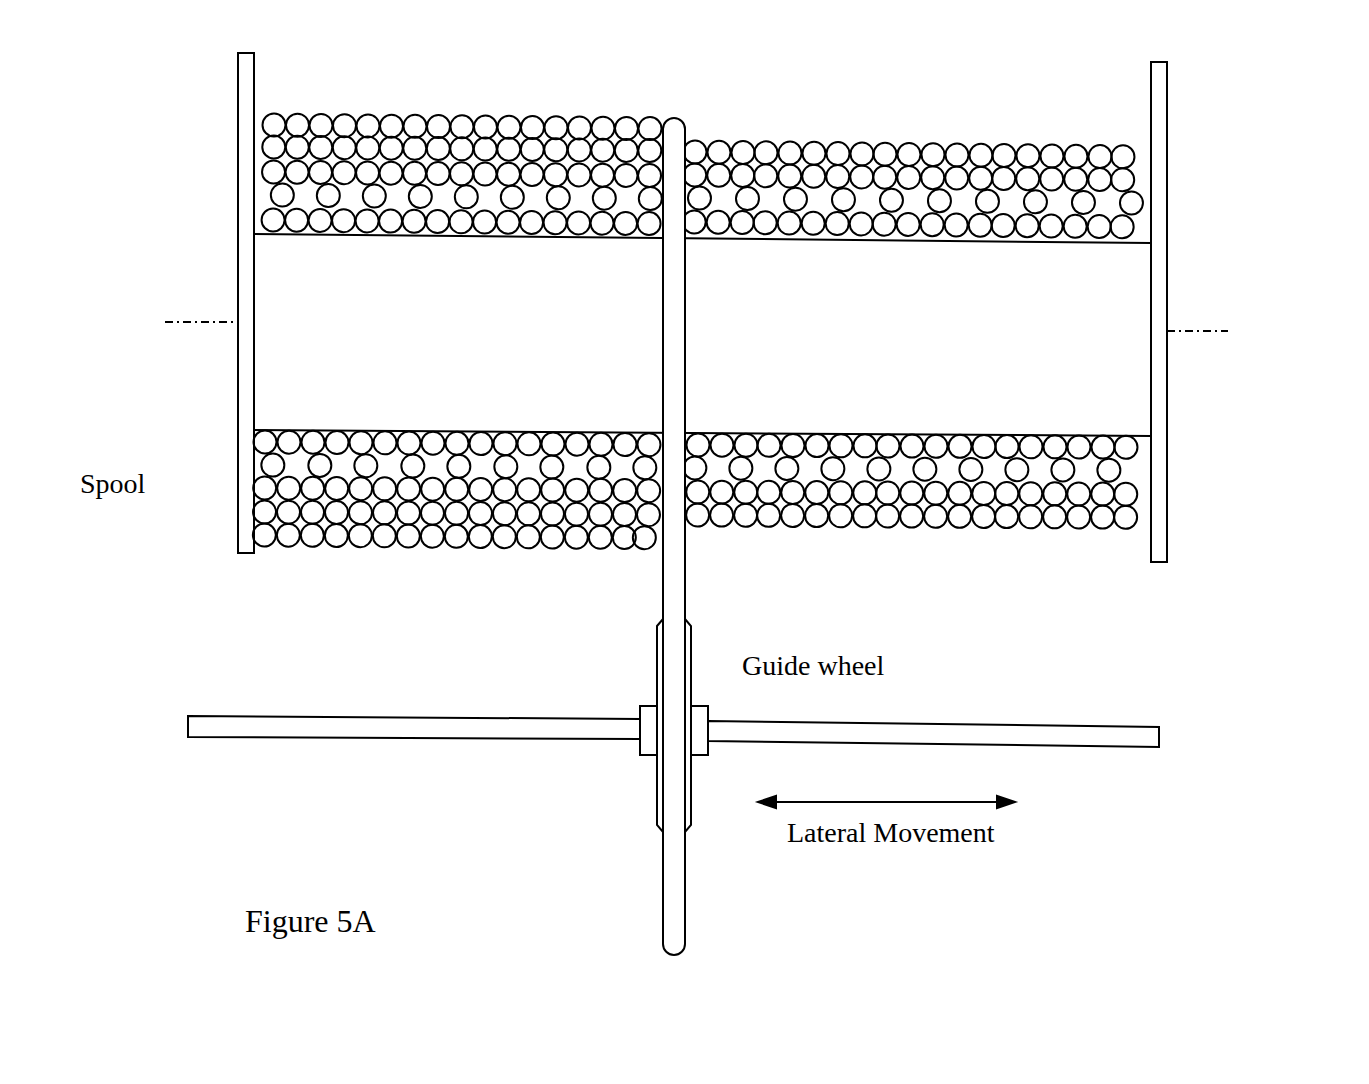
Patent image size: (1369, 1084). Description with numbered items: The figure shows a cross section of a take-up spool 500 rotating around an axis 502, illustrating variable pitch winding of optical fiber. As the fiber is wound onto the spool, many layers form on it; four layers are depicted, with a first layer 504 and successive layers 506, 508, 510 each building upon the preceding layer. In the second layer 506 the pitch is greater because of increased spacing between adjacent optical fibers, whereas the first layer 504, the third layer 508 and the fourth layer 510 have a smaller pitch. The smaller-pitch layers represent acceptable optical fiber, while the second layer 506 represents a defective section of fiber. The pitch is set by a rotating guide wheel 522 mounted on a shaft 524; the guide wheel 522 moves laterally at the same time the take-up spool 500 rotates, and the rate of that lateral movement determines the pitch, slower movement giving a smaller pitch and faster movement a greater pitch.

The take-up spool 500 is at (238, 188).
The axis 502 is at (183, 315).
The first layer 504 is at (1152, 228).
The second layer 506 is at (1143, 205).
The third layer 508 is at (1152, 180).
The fourth layer 510 is at (1152, 155).
The guide wheel 522 is at (657, 635).
The shaft 524 is at (466, 738).